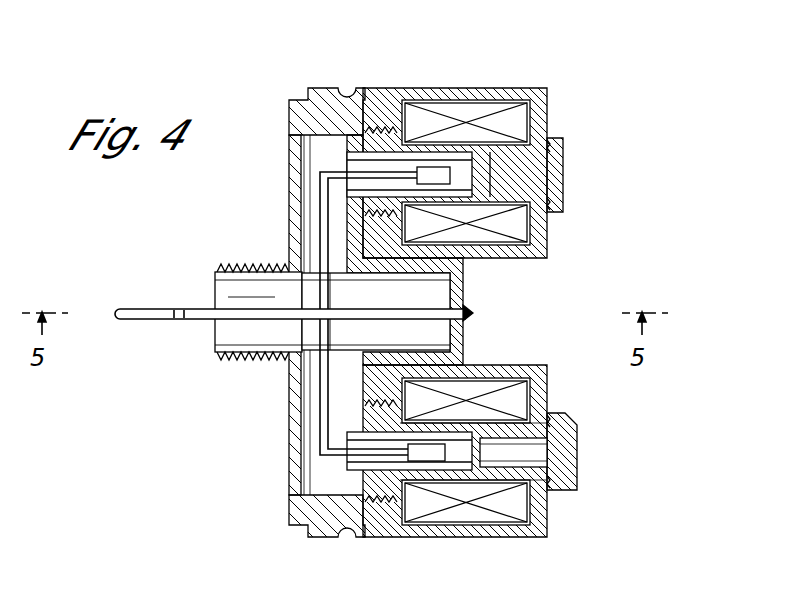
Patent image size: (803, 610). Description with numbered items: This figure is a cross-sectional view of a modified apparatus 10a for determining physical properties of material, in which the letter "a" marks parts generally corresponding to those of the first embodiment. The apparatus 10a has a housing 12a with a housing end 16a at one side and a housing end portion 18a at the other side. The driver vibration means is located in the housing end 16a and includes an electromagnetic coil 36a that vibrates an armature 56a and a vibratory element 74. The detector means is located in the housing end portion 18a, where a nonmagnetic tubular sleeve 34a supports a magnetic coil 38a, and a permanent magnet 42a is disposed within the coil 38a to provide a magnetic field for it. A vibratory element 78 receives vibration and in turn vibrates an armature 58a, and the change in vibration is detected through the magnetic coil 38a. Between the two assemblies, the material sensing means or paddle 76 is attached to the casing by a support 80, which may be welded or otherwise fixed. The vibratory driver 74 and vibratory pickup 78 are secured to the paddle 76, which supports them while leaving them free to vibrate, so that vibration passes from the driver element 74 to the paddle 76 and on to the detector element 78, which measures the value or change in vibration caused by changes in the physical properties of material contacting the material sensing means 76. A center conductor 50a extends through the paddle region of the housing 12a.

The apparatus 10a is at (467, 263).
The housing 12a is at (463, 333).
The housing end 16a is at (548, 112).
The housing end portion 18a is at (548, 520).
The nonmagnetic tubular sleeve 34a is at (500, 365).
The electromagnetic coil 36a is at (490, 108).
The magnetic coil 38a is at (495, 518).
The permanent magnet 42a is at (525, 452).
The center conductor 50a is at (140, 322).
The armature 56a is at (430, 170).
The armature 58a is at (432, 460).
The vibratory element 74 is at (322, 197).
The material sensing means 76 is at (206, 309).
The vibratory element 78 is at (323, 403).
The support 80 is at (470, 312).